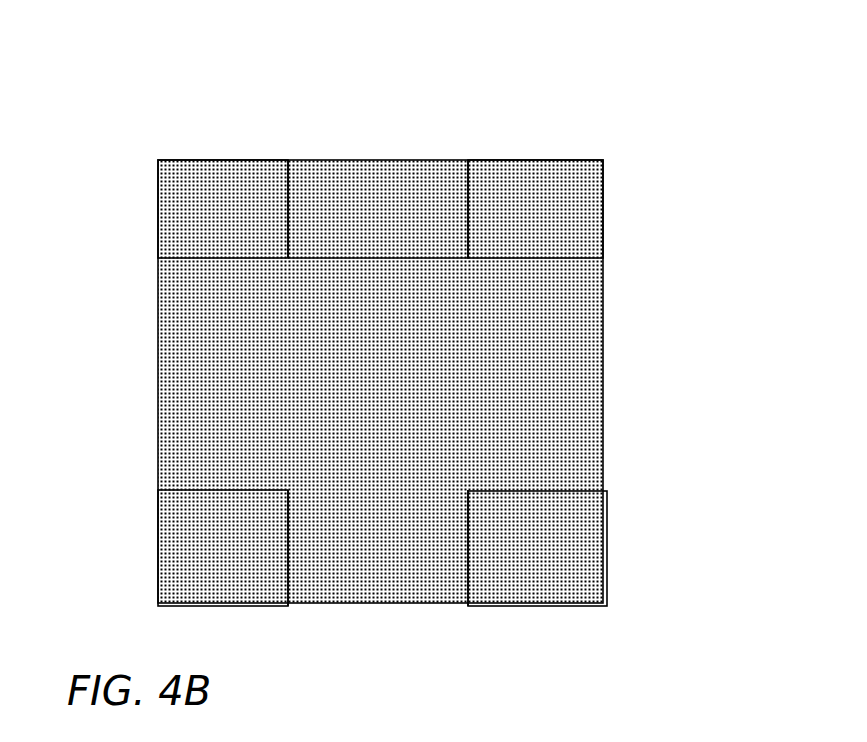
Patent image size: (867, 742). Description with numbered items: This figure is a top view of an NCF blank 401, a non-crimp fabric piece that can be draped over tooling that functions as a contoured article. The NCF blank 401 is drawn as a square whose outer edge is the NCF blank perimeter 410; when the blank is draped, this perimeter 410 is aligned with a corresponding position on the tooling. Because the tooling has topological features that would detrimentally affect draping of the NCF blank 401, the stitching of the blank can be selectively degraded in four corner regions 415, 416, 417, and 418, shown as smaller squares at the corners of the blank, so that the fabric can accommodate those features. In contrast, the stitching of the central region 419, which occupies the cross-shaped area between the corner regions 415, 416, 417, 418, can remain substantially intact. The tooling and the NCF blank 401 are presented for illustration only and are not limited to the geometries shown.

The NCF blank 401 is at (396, 332).
The NCF blank perimeter 410 is at (603, 273).
The region 415 is at (188, 233).
The region 416 is at (193, 548).
The region 417 is at (575, 552).
The region 418 is at (575, 200).
The region 419 is at (188, 397).